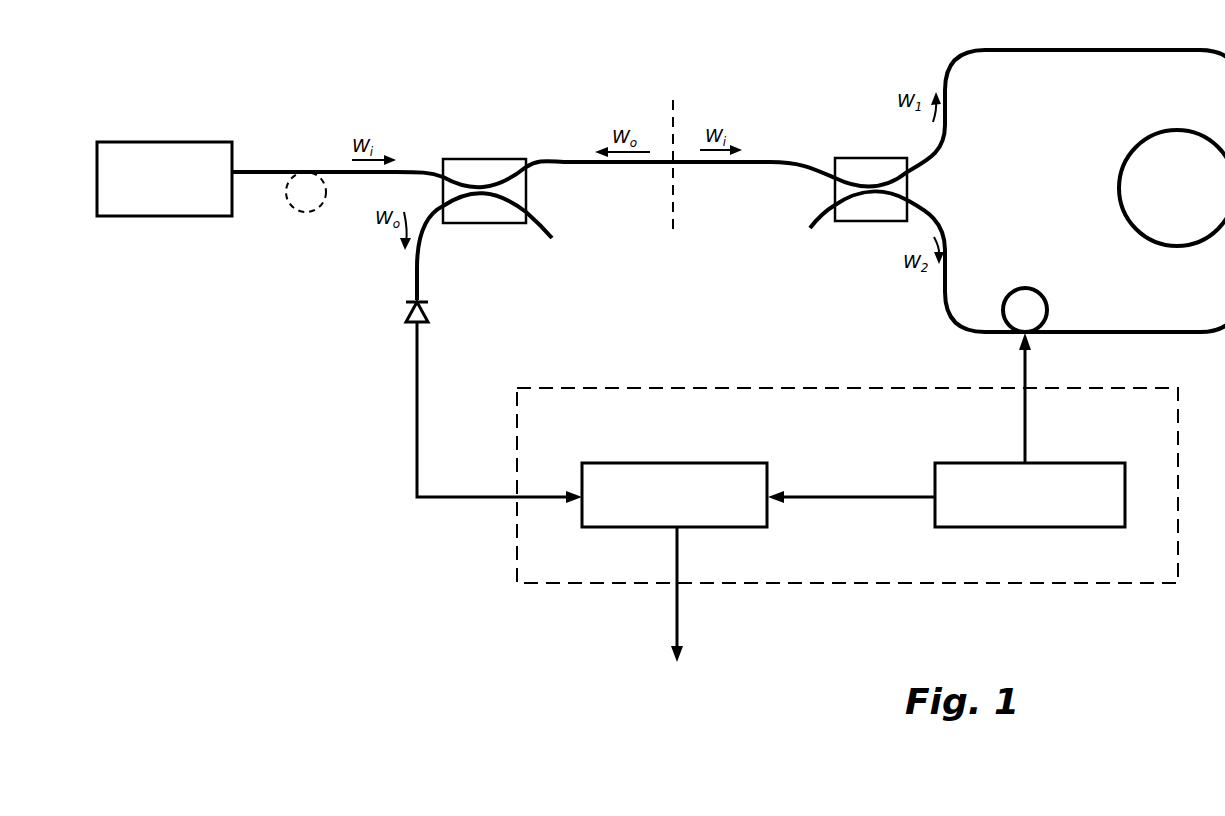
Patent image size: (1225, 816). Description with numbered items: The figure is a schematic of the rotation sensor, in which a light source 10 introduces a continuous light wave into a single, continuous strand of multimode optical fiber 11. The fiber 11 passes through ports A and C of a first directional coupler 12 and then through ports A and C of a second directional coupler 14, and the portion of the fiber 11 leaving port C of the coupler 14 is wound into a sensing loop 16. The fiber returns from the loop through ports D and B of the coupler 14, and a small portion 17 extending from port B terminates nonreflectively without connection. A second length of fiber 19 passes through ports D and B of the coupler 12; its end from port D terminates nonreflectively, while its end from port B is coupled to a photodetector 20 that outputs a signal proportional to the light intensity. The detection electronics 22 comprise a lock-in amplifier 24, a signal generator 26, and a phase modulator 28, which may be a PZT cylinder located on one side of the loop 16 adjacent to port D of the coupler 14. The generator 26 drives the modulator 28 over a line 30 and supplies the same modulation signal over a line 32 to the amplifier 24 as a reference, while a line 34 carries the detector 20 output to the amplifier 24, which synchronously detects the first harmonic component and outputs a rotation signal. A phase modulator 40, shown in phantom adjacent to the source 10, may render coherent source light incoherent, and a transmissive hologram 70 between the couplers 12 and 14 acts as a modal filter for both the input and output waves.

The light source 10 is at (180, 142).
The multimode optical fiber 11 is at (315, 168).
The first directional coupler 12 is at (492, 158).
The second directional coupler 14 is at (858, 157).
The sensing loop 16 is at (1120, 168).
The fiber portion 17 is at (820, 206).
The second length of fiber 19 is at (422, 258).
The photodetector 20 is at (428, 310).
The detection electronics 22 is at (516, 540).
The lock-in amplifier 24 is at (673, 462).
The signal generator 26 is at (1040, 527).
The phase modulator 28 is at (1030, 289).
The line 30 is at (1026, 407).
The line 32 is at (848, 496).
The line 34 is at (416, 397).
The phase modulator 40 is at (300, 212).
The transmissive hologram 70 is at (670, 208).